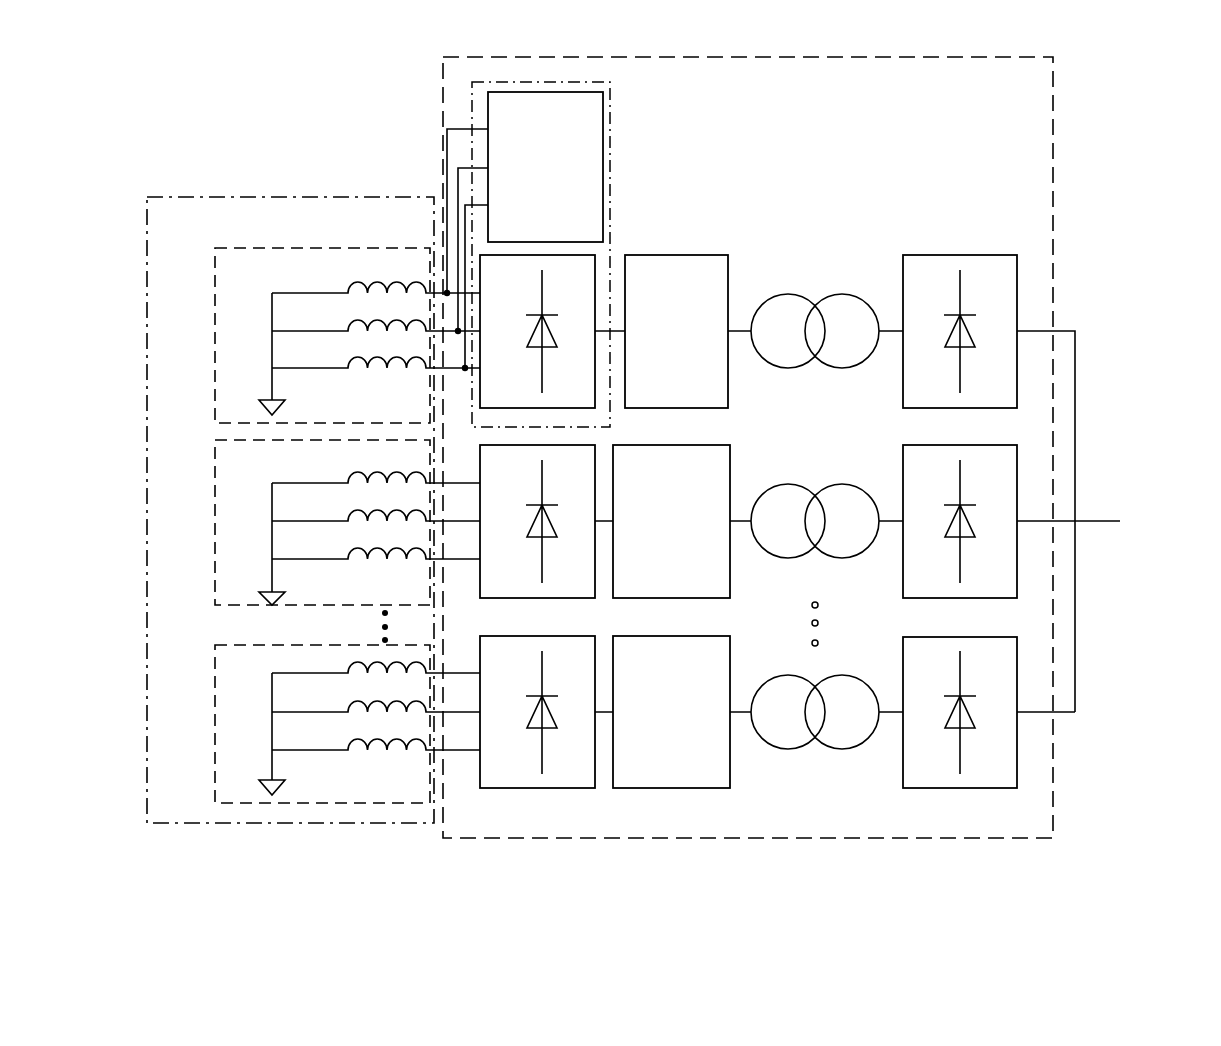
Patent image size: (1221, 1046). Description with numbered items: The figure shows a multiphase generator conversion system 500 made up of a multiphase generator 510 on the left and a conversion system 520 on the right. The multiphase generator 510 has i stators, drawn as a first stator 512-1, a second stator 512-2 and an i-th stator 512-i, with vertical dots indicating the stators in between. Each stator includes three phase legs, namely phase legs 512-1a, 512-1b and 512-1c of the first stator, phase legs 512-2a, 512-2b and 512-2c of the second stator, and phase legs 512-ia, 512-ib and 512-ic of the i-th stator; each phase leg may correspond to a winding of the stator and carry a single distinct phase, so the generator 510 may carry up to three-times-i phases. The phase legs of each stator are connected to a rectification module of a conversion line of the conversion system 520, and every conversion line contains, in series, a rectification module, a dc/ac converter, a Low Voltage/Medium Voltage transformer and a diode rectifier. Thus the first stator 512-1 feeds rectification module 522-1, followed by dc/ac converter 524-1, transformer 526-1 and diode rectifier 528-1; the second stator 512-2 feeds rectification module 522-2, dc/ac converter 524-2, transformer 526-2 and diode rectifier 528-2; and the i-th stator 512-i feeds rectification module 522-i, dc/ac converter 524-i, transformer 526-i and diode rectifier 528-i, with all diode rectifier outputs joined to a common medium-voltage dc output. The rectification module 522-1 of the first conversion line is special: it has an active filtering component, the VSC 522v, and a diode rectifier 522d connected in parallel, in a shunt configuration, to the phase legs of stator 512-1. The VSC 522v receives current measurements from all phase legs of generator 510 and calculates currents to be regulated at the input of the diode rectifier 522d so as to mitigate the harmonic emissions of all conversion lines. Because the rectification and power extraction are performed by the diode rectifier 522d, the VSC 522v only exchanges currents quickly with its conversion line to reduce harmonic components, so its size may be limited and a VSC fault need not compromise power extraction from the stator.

The multiphase generator conversion system 500 is at (1180, 66).
The multiphase generator 510 is at (245, 197).
The first stator 512-1 is at (212, 249).
The second stator 512-2 is at (218, 519).
The i-th stator 512-i is at (218, 680).
The phase leg of first stator 512-1a is at (318, 293).
The phase leg of first stator 512-1b is at (284, 331).
The phase leg of first stator 512-1c is at (310, 368).
The phase leg of second stator 512-2a is at (337, 467).
The phase leg of second stator 512-2b is at (303, 521).
The phase leg of second stator 512-2c is at (300, 559).
The phase leg of i-th stator 512-ia is at (283, 673).
The phase leg of i-th stator 512-ib is at (287, 712).
The phase leg of i-th stator 512-ic is at (305, 750).
The conversion system 520 is at (1053, 200).
The rectification module 522-1 is at (610, 155).
The rectification module 522-2 is at (585, 447).
The rectification module 522-i is at (550, 637).
The VSC 522v is at (566, 121).
The diode rectifier 522d is at (527, 283).
The dc/ac converter 524-1 is at (725, 256).
The dc/ac converter 524-2 is at (697, 445).
The dc/ac converter 524-i is at (690, 636).
The Low Voltage/Medium Voltage transformer 526-1 is at (833, 298).
The Low Voltage/Medium Voltage transformer 526-2 is at (797, 482).
The Low Voltage/Medium Voltage transformer 526-i is at (790, 677).
The diode rectifier 528-1 is at (963, 257).
The diode rectifier 528-2 is at (940, 443).
The diode rectifier 528-i is at (933, 634).